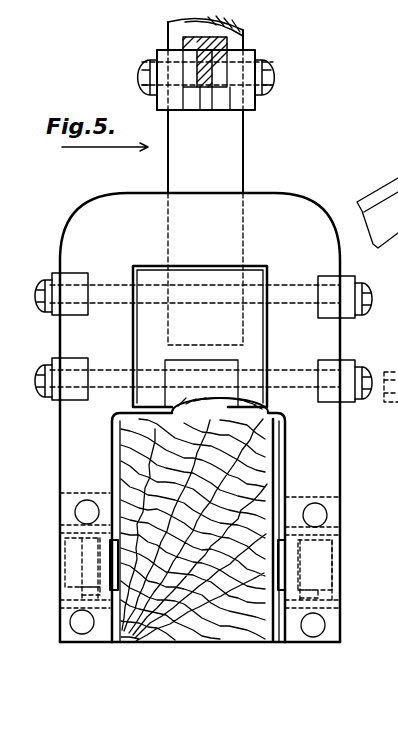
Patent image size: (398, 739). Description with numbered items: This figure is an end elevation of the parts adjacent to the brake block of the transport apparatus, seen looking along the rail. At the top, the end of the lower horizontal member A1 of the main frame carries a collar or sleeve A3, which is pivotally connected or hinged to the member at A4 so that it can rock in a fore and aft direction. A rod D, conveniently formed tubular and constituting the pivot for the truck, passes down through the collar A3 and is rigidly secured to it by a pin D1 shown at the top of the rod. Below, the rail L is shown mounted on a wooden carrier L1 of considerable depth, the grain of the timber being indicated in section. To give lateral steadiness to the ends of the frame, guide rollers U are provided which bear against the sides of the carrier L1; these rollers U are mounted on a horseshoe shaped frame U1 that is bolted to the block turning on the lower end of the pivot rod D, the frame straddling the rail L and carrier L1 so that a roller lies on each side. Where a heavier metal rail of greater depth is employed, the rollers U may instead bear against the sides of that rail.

The rod D is at (197, 173).
The pin D1 is at (227, 42).
The lower horizontal member A1 is at (248, 100).
The collar A3 is at (193, 100).
The hinge A4 is at (298, 60).
The guide rollers U is at (78, 253).
The horseshoe shaped frame U1 is at (77, 570).
The rail L is at (211, 527).
The wooden carrier L1 is at (142, 470).